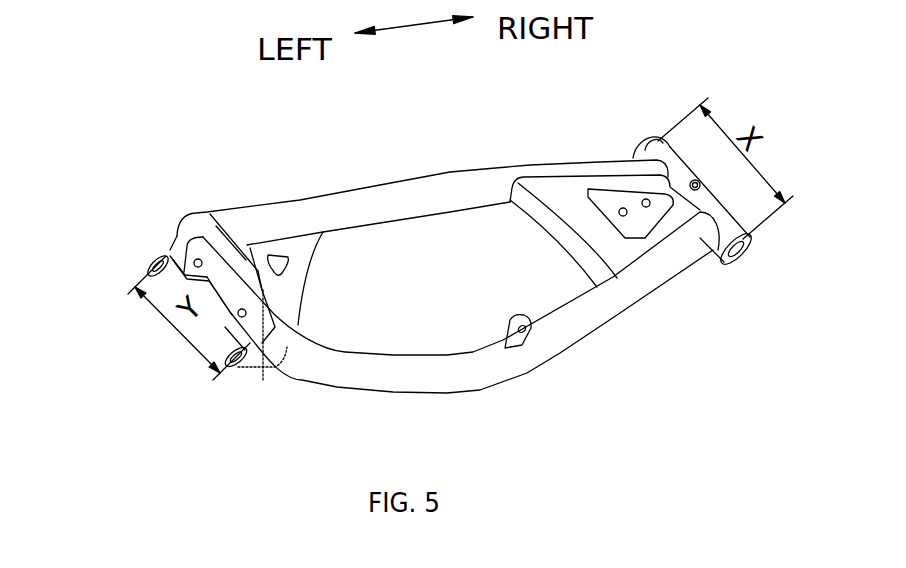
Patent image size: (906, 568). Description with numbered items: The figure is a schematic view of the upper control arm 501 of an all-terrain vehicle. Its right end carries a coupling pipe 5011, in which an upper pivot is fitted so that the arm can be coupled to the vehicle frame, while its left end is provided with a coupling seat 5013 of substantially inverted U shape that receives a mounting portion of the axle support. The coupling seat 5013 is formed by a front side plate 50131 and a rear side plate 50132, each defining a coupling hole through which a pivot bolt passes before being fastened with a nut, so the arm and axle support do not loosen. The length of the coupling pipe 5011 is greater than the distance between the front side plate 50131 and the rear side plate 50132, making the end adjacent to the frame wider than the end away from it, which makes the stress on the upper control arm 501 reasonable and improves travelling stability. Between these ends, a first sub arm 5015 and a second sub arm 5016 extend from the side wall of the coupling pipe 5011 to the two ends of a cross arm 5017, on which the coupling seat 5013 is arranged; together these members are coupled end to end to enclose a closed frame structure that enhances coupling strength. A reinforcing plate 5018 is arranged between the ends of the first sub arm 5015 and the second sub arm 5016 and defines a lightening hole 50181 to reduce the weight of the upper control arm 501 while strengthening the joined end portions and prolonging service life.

The upper control arm 501 is at (365, 210).
The coupling pipe 5011 is at (655, 140).
The coupling seat 5013 is at (178, 243).
The front side plate 50131 is at (150, 262).
The rear side plate 50132 is at (237, 368).
The first sub arm 5015 is at (530, 348).
The second sub arm 5016 is at (465, 180).
The cross arm 5017 is at (264, 380).
The reinforcing plate 5018 is at (625, 252).
The lightening hole 50181 is at (258, 255).